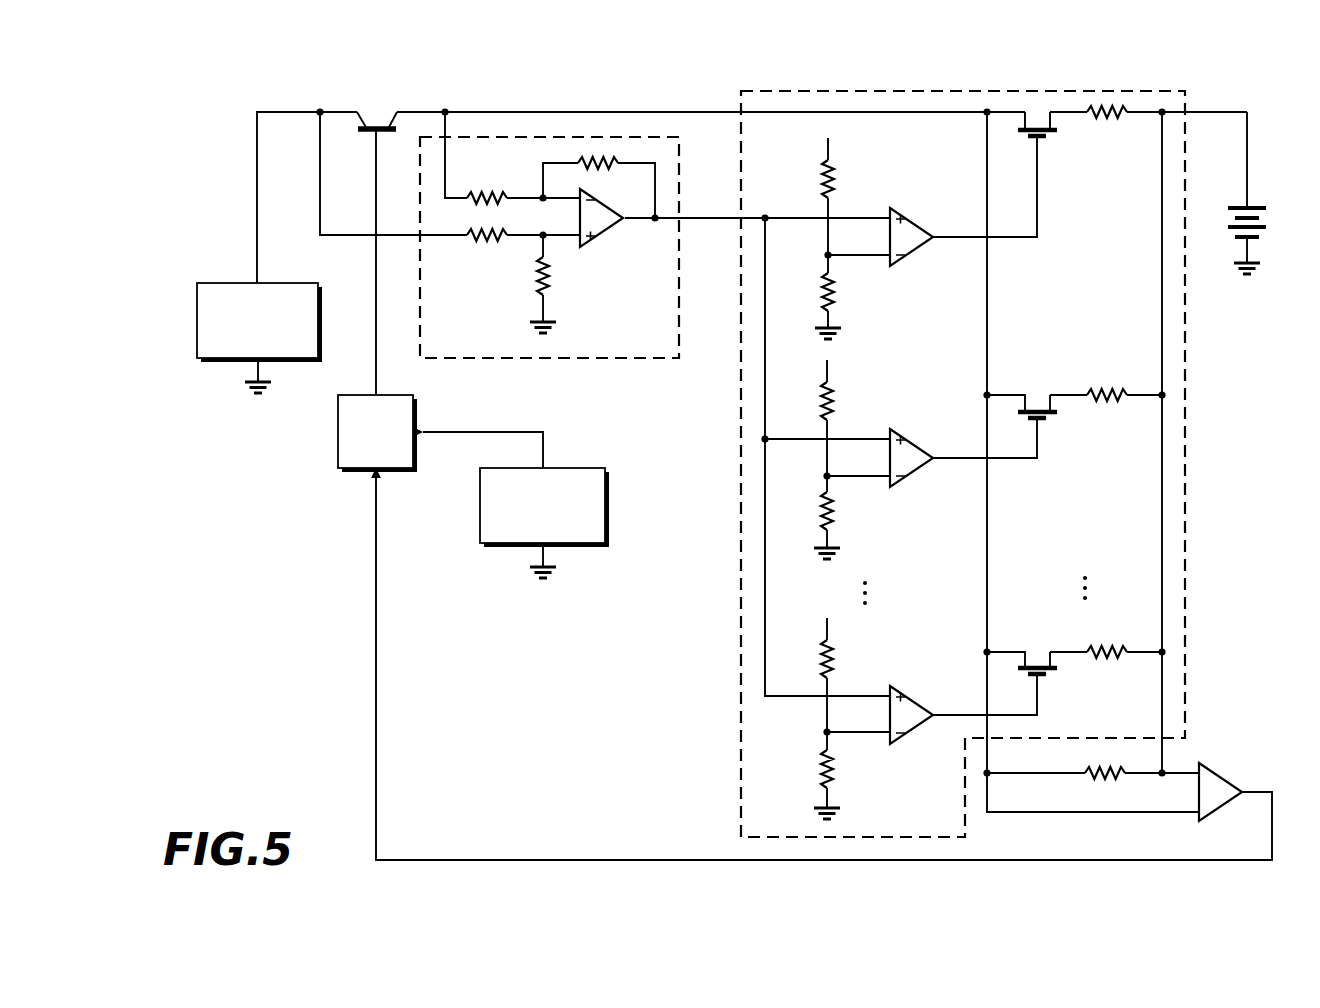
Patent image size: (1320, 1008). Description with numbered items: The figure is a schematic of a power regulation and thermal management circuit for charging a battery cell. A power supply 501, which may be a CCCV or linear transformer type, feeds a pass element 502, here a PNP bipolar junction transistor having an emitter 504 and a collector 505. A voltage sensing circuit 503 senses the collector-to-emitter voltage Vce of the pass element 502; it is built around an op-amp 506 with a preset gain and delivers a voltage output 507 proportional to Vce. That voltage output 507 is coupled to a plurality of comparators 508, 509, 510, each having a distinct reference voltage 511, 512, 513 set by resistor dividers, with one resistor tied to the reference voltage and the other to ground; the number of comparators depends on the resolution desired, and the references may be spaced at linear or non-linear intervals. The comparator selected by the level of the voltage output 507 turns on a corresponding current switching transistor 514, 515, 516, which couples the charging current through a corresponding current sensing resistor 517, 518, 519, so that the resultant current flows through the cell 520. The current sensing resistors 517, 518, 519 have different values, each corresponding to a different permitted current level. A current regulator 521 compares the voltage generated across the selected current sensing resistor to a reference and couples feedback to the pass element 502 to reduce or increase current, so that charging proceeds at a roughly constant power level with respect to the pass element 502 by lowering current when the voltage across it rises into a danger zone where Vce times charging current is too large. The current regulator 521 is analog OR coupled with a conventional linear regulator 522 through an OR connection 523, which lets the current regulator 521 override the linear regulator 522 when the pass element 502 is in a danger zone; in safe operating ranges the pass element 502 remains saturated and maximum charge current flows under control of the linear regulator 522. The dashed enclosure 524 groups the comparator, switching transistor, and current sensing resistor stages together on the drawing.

The power supply 501 is at (232, 283).
The pass element 502 is at (374, 122).
The voltage sensing circuit 503 is at (549, 266).
The emitter 504 is at (364, 120).
The collector 505 is at (391, 118).
The op-amp 506 is at (607, 238).
The voltage output 507 is at (712, 222).
The comparator 508 is at (919, 253).
The comparator 509 is at (918, 473).
The comparator 510 is at (913, 698).
The reference voltage 511 is at (812, 257).
The reference voltage 512 is at (811, 477).
The reference voltage 513 is at (811, 735).
The current switching transistor 514 is at (1040, 138).
The current switching transistor 515 is at (1040, 420).
The current switching transistor 516 is at (1040, 678).
The current sensing resistor 517 is at (1123, 116).
The current sensing resistor 518 is at (1113, 400).
The current sensing resistor 519 is at (1123, 656).
The cell 520 is at (1256, 208).
The current regulator 521 is at (1217, 773).
The linear regulator 522 is at (575, 468).
The OR connection 523 is at (336, 441).
The charging control circuit 524 is at (1187, 560).